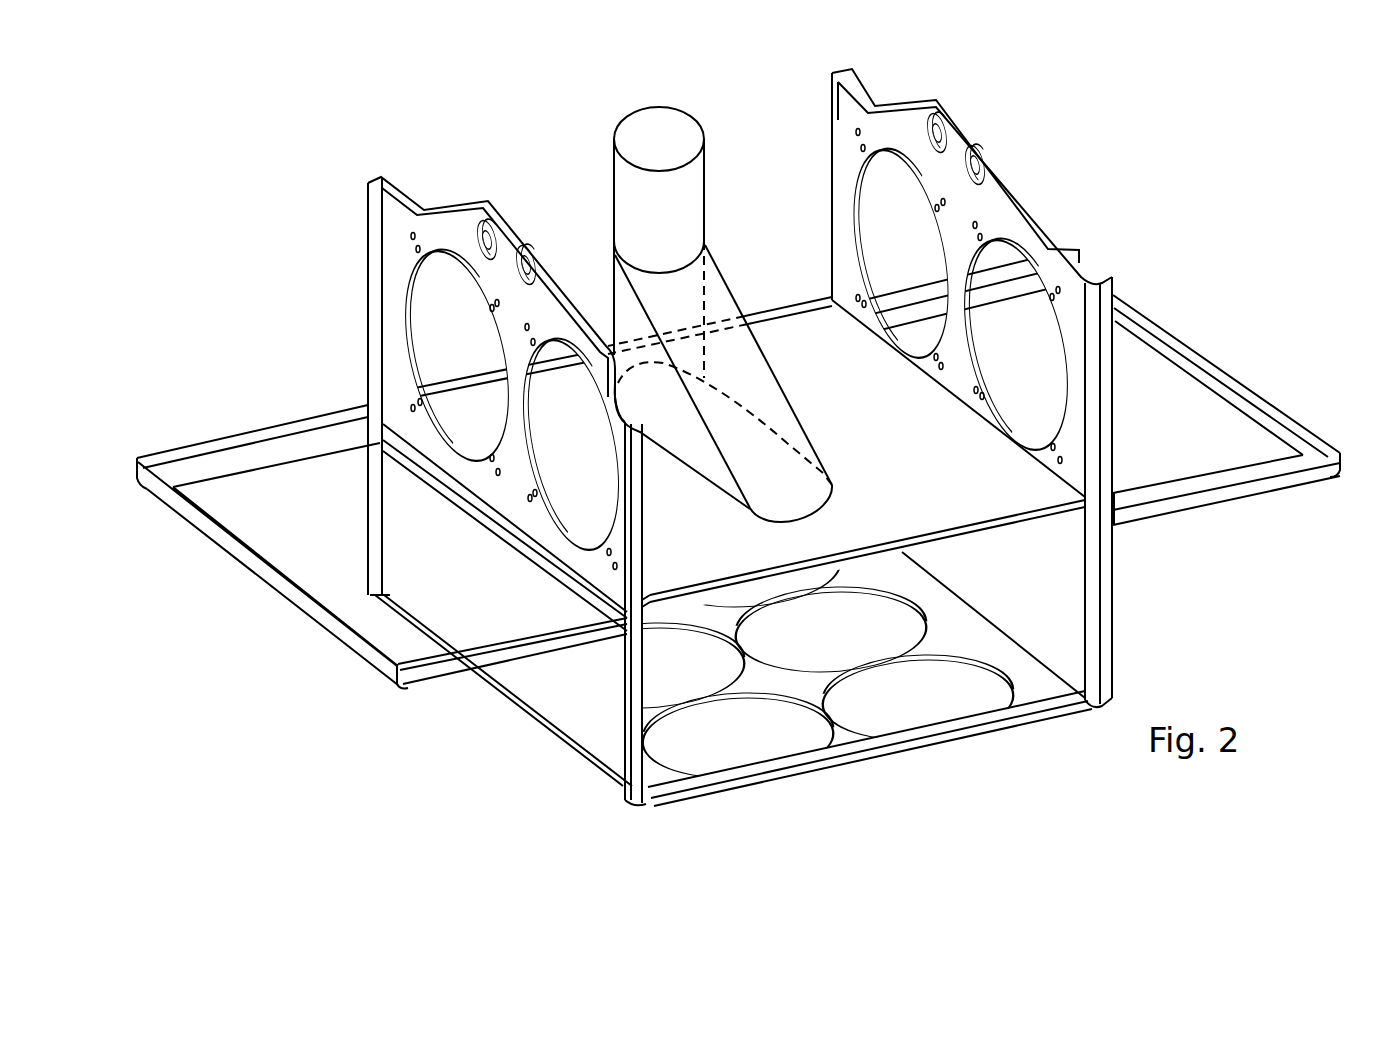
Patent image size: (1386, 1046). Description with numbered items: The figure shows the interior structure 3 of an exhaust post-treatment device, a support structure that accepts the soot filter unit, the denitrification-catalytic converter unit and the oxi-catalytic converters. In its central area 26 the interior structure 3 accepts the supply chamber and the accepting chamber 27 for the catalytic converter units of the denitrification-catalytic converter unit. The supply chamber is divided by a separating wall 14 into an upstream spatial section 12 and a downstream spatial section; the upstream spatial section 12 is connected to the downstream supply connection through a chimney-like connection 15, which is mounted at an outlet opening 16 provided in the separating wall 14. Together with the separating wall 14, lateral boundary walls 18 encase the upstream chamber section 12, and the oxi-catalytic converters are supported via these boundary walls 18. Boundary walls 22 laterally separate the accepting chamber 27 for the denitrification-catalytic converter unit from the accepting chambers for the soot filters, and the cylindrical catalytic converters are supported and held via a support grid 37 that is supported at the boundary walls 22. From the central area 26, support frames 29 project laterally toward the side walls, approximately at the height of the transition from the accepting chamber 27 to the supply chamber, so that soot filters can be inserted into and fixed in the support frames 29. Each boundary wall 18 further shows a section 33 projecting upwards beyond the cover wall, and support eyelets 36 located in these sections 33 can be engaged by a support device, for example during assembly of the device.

The interior structure 3 is at (872, 90).
The upstream spatial section 12 is at (596, 137).
The separating wall 14 is at (920, 487).
The chimney-like connection 15 is at (752, 383).
The outlet opening 16 is at (790, 448).
The lateral boundary walls 18 is at (1012, 212).
The boundary walls 22 is at (1076, 549).
The central area 26 is at (758, 150).
The accepting chamber 27 is at (1055, 610).
The support frames 29 is at (270, 437).
The section 33 is at (1000, 172).
The support eyelets 36 is at (938, 125).
The support grid 37 is at (846, 738).